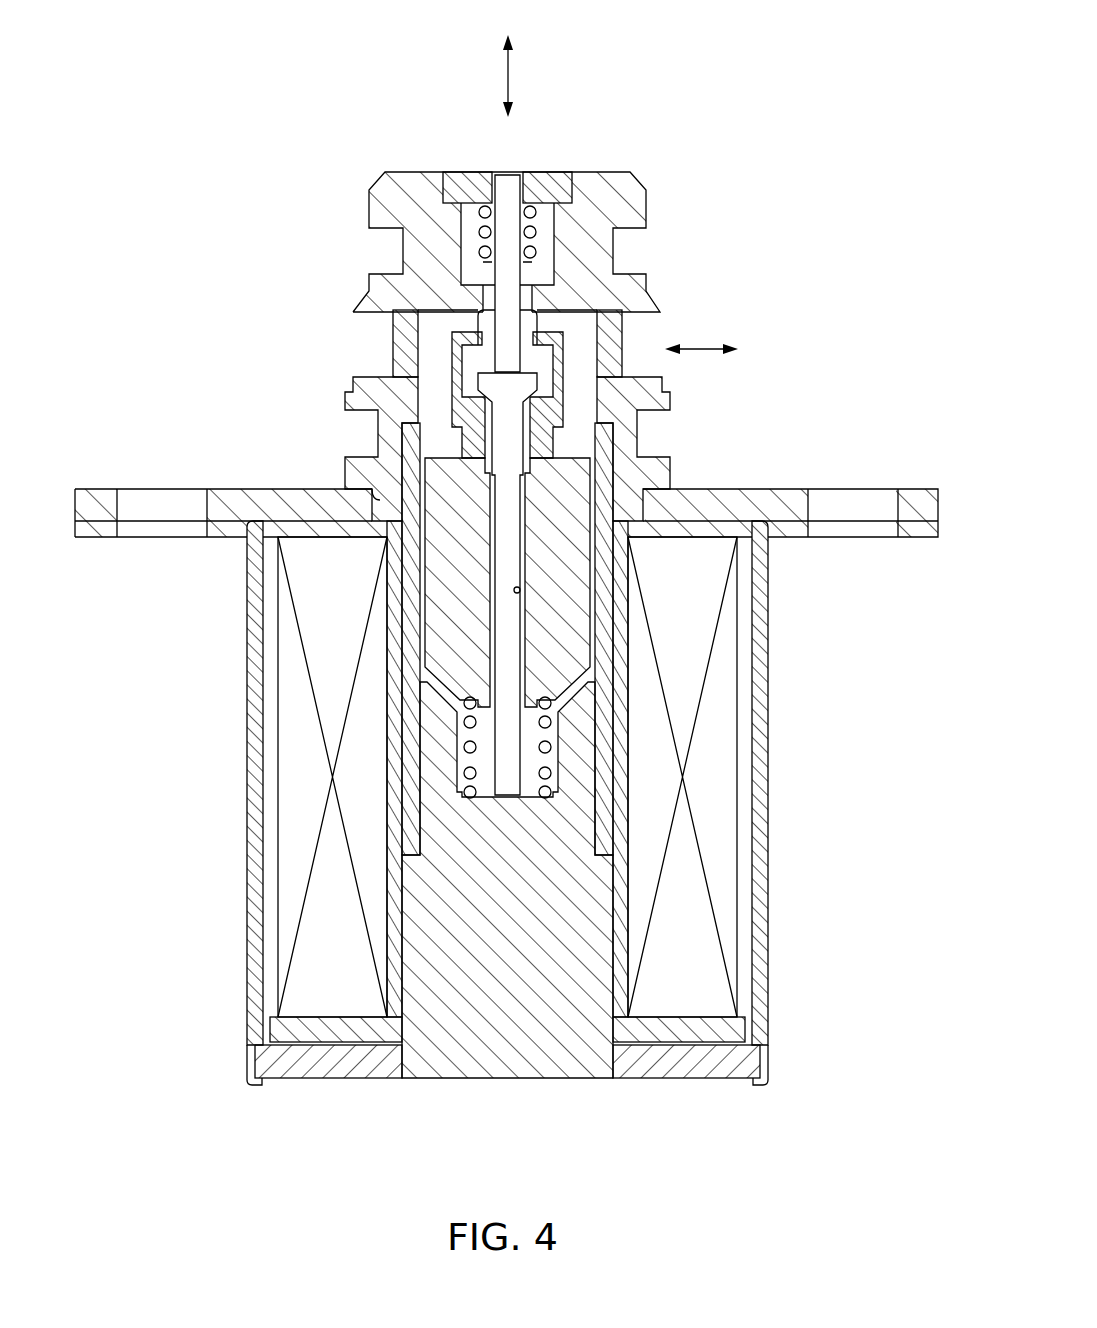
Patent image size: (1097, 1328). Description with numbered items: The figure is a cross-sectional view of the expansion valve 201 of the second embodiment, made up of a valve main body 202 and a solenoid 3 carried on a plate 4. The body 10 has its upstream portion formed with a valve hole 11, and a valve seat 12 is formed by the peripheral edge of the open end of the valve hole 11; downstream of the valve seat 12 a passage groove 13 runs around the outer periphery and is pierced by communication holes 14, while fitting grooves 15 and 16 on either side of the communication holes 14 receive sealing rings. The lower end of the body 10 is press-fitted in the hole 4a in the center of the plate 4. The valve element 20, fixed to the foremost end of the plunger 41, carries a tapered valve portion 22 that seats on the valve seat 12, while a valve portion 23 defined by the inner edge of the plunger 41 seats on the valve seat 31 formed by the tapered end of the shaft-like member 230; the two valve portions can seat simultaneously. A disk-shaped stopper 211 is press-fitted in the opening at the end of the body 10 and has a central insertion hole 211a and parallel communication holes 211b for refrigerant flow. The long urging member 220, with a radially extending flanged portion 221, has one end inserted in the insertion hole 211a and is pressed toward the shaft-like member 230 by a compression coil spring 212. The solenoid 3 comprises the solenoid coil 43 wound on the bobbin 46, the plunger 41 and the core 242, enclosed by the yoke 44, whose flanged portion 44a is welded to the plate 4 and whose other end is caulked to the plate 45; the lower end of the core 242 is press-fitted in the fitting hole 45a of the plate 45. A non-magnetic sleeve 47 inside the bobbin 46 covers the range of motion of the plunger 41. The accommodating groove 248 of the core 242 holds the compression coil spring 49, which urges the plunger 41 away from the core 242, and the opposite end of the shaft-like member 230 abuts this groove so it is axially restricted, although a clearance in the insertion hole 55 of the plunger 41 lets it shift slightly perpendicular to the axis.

The expansion valve 201 is at (742, 228).
The valve main body 202 is at (641, 177).
The body 10 is at (378, 180).
The valve hole 11 is at (523, 277).
The valve seat 12 is at (537, 303).
The passage groove 13 is at (367, 308).
The communication holes 14 is at (614, 317).
The fitting groove 15 is at (637, 235).
The fitting groove 16 is at (648, 408).
The valve element 20 is at (455, 372).
The valve portion 22 is at (490, 310).
The valve portion 23 is at (480, 398).
The valve seat 31 is at (560, 392).
The stopper 211 is at (455, 172).
The insertion hole 211a is at (520, 175).
The communication holes 211b is at (552, 183).
The compression coil spring 212 is at (483, 205).
The urging member 220 is at (488, 275).
The flanged portion 221 is at (485, 262).
The shaft-like member 230 is at (492, 453).
The solenoid 3 is at (770, 687).
The plate 4 is at (245, 487).
The hole 4a is at (375, 500).
The flanged portion 44a is at (100, 540).
The plunger 41 is at (440, 635).
The solenoid coil 43 is at (295, 738).
The yoke 44 is at (250, 862).
The plate 45 is at (332, 1070).
The fitting hole 45a is at (425, 1065).
The bobbin 46 is at (285, 1030).
The sleeve 47 is at (410, 795).
The compression coil spring 49 is at (552, 760).
The insertion hole 55 is at (520, 592).
The core 242 is at (563, 1047).
The accommodating groove 248 is at (545, 735).